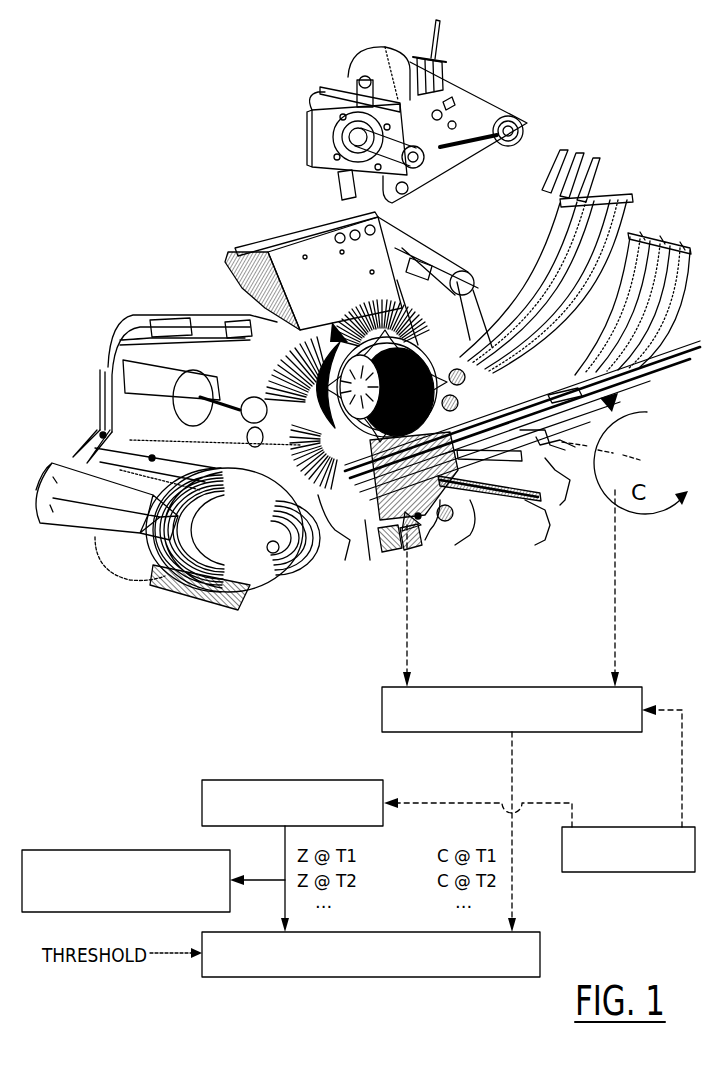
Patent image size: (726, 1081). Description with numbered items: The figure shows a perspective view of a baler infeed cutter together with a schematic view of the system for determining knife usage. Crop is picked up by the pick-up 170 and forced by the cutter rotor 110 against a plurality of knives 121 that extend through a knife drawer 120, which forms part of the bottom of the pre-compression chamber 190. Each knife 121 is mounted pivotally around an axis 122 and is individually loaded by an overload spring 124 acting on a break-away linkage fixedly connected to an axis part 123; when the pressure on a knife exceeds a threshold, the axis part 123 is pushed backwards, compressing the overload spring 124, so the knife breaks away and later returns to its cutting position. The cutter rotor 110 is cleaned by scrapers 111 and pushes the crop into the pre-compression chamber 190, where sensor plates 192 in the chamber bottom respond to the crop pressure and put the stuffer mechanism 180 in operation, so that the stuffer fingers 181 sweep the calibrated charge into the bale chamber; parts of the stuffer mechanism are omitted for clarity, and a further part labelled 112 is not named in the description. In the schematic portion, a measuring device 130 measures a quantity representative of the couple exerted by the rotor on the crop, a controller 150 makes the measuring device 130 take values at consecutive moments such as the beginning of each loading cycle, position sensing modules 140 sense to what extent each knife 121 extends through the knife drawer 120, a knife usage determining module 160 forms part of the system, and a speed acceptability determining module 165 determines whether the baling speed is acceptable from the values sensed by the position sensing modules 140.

The cutter rotor 110 is at (318, 268).
The scrapers 111 is at (428, 302).
The drive shaft boss 112 is at (262, 443).
The knife drawer 120 is at (390, 548).
The knives 121 is at (427, 537).
The axis 122 is at (405, 550).
The axis part 123 is at (465, 510).
The overload spring 124 is at (490, 514).
The measuring device 130 is at (452, 690).
The position sensing modules 140 is at (272, 780).
The controller 150 is at (607, 863).
The knife usage determining module 160 is at (378, 970).
The speed acceptability determining module 165 is at (96, 850).
The pick-up 170 is at (166, 630).
The stuffer mechanism 180 is at (491, 52).
The stuffer fingers 181 is at (494, 283).
The pre-compression chamber 190 is at (572, 388).
The sensor plates 192 is at (536, 440).